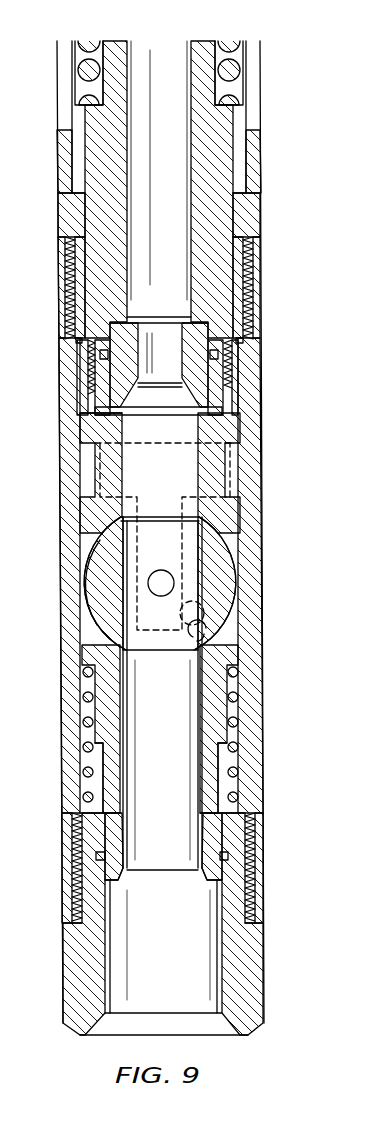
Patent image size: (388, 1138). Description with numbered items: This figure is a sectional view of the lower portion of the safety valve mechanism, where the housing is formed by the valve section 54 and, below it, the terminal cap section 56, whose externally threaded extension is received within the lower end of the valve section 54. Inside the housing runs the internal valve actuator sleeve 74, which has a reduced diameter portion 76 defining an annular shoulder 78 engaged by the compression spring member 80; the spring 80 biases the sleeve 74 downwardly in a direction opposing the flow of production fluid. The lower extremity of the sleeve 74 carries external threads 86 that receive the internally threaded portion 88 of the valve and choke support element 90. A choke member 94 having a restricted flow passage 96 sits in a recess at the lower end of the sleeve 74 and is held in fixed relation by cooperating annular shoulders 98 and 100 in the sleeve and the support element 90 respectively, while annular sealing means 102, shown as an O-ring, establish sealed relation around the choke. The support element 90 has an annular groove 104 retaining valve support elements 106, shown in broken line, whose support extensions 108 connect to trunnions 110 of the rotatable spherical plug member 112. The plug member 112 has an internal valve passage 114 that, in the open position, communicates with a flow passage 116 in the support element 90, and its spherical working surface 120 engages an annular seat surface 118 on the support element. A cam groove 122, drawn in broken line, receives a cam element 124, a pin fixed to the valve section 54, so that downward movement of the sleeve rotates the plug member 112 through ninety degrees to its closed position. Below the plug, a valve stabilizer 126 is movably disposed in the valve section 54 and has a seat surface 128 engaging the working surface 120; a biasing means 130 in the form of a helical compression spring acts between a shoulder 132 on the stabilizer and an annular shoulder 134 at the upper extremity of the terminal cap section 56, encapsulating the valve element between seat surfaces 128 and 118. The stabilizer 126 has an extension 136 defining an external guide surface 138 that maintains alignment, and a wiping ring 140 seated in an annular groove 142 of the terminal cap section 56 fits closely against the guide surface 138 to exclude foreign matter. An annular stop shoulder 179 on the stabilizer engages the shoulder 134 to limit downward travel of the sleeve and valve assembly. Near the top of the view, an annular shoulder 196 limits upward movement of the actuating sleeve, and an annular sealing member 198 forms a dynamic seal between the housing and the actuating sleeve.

The valve section 54 is at (253, 668).
The terminal cap section 56 is at (250, 967).
The internal valve actuator sleeve 74 is at (214, 153).
The reduced diameter portion 76 is at (278, 62).
The annular shoulder 78 is at (228, 96).
The compression spring member 80 is at (57, 80).
The external threads 86 is at (93, 367).
The internally threaded portion 88 is at (88, 401).
The valve and choke support element 90 is at (92, 433).
The choke member 94 is at (202, 343).
The restricted flow passage 96 is at (180, 318).
The annular shoulder 98 is at (240, 331).
The annular shoulder 100 is at (213, 413).
The annular sealing means 102 is at (100, 355).
The annular groove 104 is at (93, 477).
The valve support elements 106 is at (241, 474).
The support extensions 108 is at (166, 586).
The trunnions 110 is at (173, 583).
The rotatable spherical plug member 112 is at (100, 610).
The internal valve passage 114 is at (130, 645).
The flow passage 116 is at (197, 462).
The annular seat surface 118 is at (107, 541).
The spherical working surface 120 is at (85, 575).
The cam groove 122 is at (196, 611).
The cam element 124 is at (205, 634).
The valve stabilizer 126 is at (110, 705).
The seat surface 128 is at (78, 648).
The biasing means 130 is at (85, 772).
The shoulder 132 is at (230, 678).
The annular shoulder 134 is at (242, 810).
The extension 136 is at (209, 773).
The external guide surface 138 is at (95, 786).
The wiping ring 140 is at (98, 858).
The annular groove 142 is at (232, 858).
The annular stop shoulder 179 is at (226, 748).
The annular shoulder 196 is at (244, 339).
The annular sealing member 198 is at (80, 340).